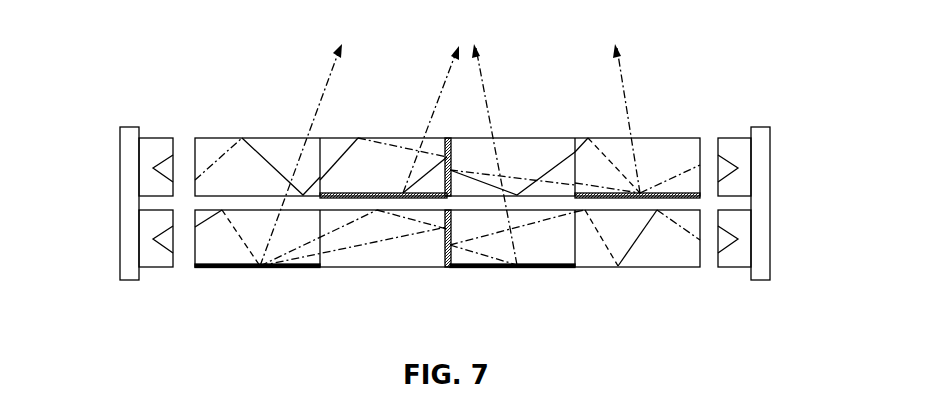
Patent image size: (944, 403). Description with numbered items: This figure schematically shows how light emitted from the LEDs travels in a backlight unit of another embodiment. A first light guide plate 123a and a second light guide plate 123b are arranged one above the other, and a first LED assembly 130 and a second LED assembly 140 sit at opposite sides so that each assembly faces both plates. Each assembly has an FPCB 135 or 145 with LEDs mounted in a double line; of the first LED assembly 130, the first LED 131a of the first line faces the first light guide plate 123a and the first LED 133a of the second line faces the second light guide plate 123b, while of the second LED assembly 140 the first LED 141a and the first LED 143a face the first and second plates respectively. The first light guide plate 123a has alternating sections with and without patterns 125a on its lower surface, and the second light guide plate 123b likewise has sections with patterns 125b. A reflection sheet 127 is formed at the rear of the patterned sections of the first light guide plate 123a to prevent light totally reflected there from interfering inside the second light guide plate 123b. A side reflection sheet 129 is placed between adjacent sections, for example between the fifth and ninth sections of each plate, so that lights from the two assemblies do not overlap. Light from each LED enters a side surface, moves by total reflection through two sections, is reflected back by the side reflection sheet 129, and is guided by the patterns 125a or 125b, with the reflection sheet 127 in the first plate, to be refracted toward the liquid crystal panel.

The second LED assembly 140 is at (133, 70).
The first LED of the first line of the second LED assembly 141a is at (152, 138).
The first LED of the second line of the second LED assembly 143a is at (155, 268).
The FPCB 145 is at (120, 182).
The first LED assembly 130 is at (762, 90).
The first LED of the first line of the first LED assembly 131a is at (737, 138).
The first LED of the second line of the first LED assembly 133a is at (733, 268).
The FPCB 135 is at (770, 203).
The first light guide plate 123a is at (212, 138).
The second light guide plate 123b is at (225, 268).
The patterns 125a is at (668, 199).
The patterns 125b is at (303, 268).
The reflection sheet 127 is at (415, 200).
The side reflection sheet 129 is at (450, 245).